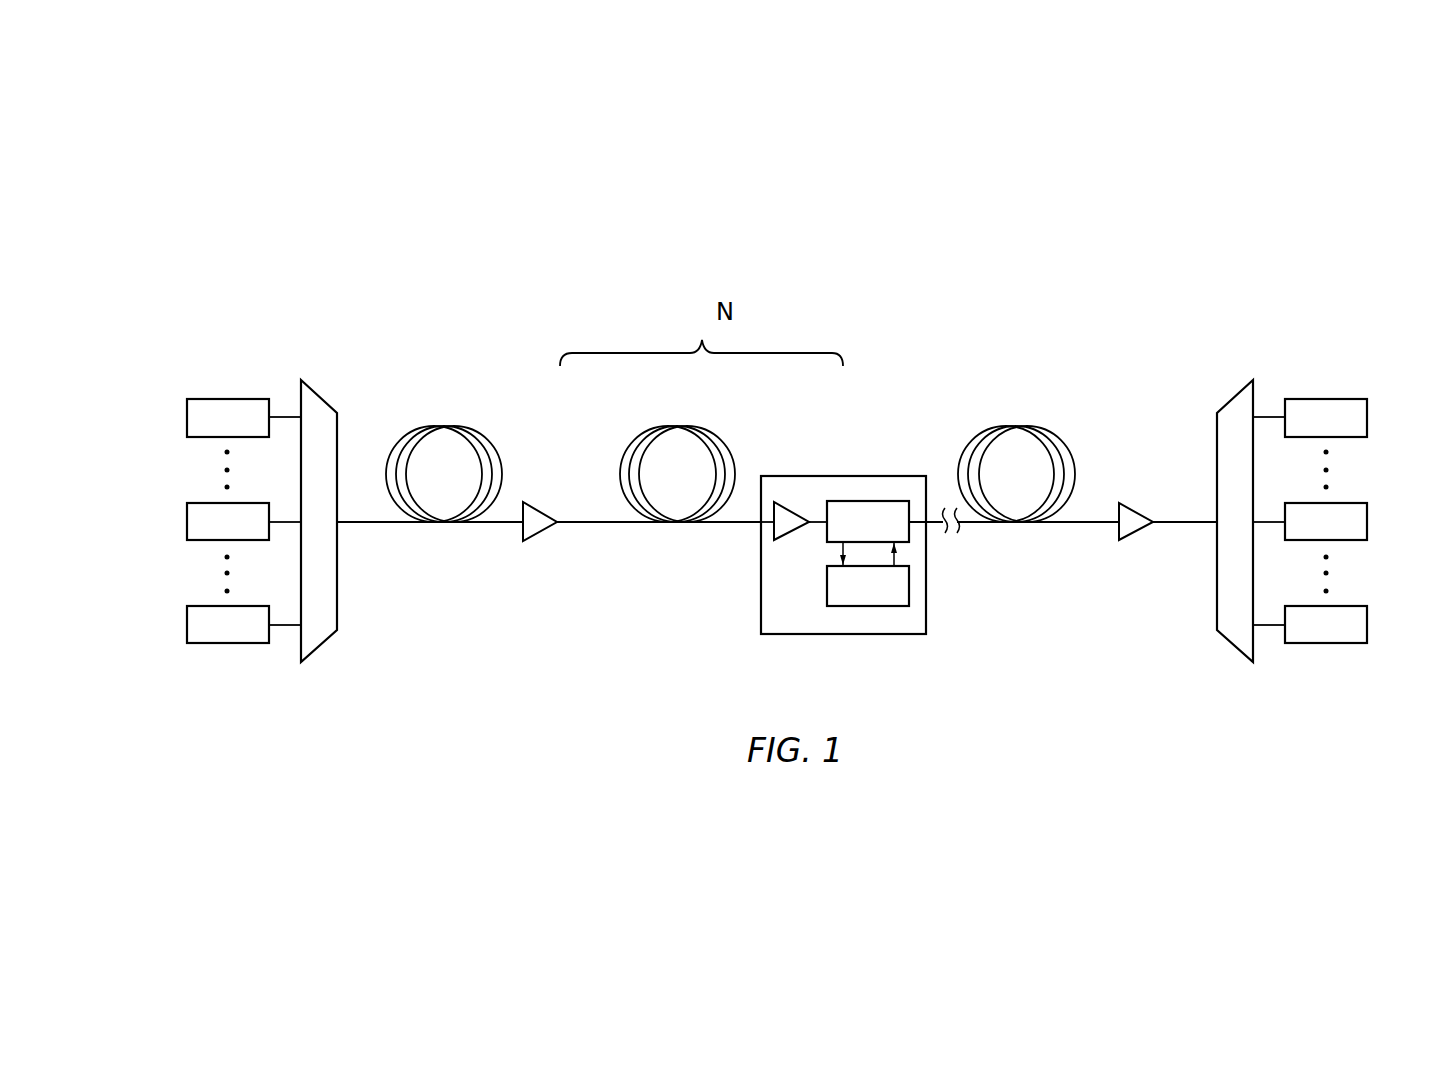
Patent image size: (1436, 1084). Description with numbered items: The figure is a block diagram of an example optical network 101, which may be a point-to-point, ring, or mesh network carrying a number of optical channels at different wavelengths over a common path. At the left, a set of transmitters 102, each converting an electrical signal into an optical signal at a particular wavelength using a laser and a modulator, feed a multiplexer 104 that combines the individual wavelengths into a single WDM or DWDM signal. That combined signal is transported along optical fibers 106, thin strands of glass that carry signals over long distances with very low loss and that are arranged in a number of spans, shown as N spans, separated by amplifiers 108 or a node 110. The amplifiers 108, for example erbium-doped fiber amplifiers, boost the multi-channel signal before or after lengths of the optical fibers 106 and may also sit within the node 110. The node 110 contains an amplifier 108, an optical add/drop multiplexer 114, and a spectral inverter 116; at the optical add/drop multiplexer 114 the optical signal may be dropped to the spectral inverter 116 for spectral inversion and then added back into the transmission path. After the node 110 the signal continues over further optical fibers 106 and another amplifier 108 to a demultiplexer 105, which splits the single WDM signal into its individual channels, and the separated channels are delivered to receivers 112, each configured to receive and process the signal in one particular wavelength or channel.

The optical network 101 is at (286, 262).
The transmitters 102 is at (203, 398).
The multiplexer 104 is at (318, 394).
The demultiplexer 105 is at (1238, 390).
The optical fibers 106 is at (466, 425).
The amplifiers 108 is at (537, 533).
The node 110 is at (853, 476).
The receivers 112 is at (1350, 399).
The optical add/drop multiplexer 114 is at (909, 535).
The spectral inverter 116 is at (909, 582).